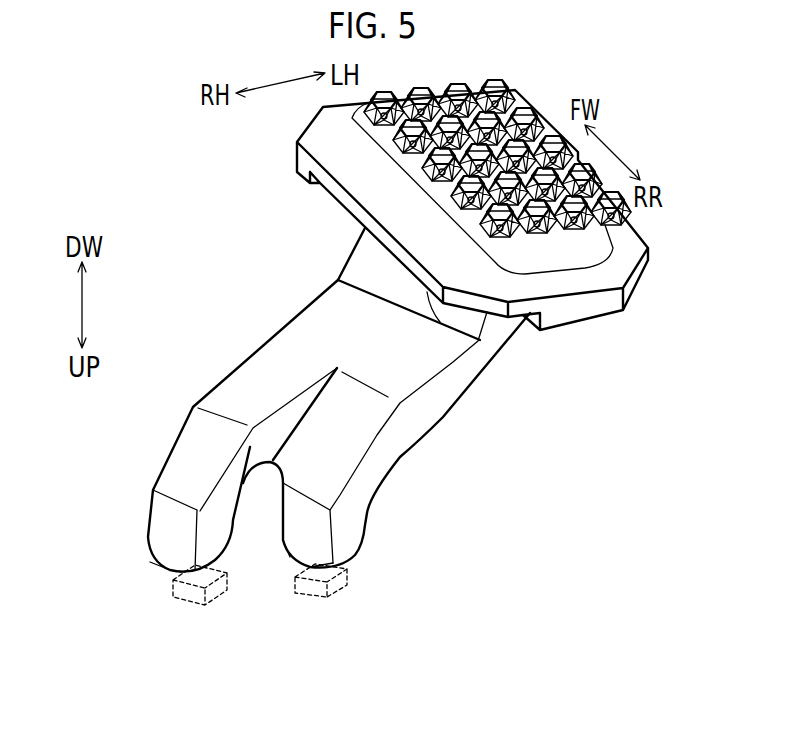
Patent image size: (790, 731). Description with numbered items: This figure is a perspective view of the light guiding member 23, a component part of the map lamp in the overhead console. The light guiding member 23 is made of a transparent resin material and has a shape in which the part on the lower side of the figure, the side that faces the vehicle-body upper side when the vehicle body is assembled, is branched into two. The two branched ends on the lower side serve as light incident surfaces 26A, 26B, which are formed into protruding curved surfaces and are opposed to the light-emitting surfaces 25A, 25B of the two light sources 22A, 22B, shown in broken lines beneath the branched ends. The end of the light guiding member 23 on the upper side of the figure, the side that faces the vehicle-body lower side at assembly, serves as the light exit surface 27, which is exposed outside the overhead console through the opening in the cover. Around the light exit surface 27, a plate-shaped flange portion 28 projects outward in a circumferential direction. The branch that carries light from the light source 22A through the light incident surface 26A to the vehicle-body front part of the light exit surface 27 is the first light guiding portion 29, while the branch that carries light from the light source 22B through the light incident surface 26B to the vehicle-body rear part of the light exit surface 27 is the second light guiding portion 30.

The light guiding member 23 is at (525, 455).
The flange portion 28 is at (380, 192).
The light exit surface 27 is at (507, 115).
The first light guiding portion 29 is at (267, 380).
The second light guiding portion 30 is at (340, 427).
The light-emitting surface 25A is at (197, 573).
The light-emitting surface 25B is at (318, 567).
The light incident surface 26A is at (163, 568).
The light incident surface 26B is at (293, 565).
The light source 22A is at (173, 590).
The light source 22B is at (347, 590).